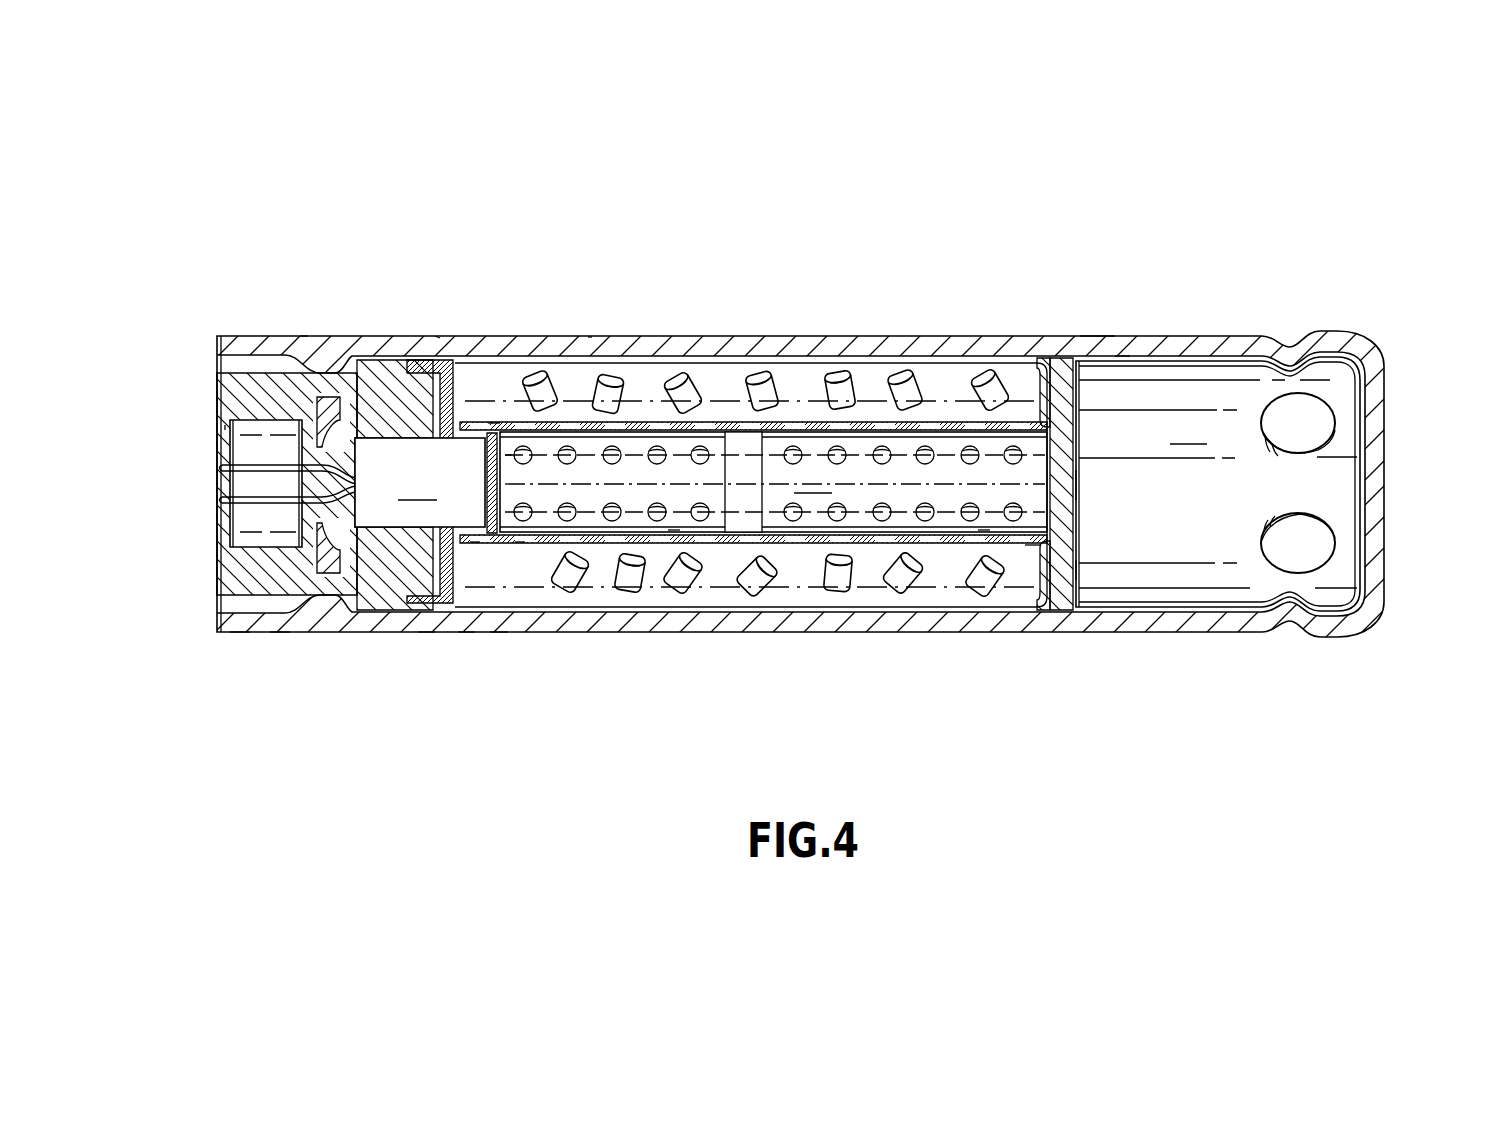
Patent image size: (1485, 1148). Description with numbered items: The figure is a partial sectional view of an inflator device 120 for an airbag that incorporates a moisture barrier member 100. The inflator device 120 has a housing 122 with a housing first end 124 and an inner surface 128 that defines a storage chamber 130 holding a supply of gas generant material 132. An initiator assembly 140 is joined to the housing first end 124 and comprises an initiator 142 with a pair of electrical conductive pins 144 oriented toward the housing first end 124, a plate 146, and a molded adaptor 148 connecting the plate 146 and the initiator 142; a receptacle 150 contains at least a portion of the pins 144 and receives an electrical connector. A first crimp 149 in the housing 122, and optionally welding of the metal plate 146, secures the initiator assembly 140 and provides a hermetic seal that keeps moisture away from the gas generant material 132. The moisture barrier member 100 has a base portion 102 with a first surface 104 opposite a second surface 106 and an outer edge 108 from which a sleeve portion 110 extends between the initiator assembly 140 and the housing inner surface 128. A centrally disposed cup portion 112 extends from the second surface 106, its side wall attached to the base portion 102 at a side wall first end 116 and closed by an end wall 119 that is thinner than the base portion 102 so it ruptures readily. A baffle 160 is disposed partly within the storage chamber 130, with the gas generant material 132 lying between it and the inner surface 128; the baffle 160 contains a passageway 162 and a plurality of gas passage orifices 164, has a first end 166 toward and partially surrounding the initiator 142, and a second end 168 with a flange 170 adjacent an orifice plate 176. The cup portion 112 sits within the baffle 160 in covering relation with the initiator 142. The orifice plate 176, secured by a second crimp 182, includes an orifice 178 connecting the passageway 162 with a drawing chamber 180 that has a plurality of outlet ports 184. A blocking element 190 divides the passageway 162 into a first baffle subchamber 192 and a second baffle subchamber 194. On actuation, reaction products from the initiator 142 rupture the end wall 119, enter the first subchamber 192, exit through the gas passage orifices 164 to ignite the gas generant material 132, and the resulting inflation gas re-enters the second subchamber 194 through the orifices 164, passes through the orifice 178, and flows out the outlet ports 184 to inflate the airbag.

The moisture barrier member 100 is at (437, 336).
The base portion 102 is at (499, 633).
The first surface 104 is at (398, 336).
The second surface 106 is at (460, 383).
The outer edge 108 is at (466, 633).
The sleeve portion 110 is at (427, 633).
The cup portion 112 is at (517, 526).
The side wall first end 116 is at (473, 548).
The end wall 119 is at (500, 478).
The inflator device 120 is at (255, 310).
The housing 122 is at (747, 336).
The housing first end 124 is at (238, 633).
The inner surface 128 is at (893, 363).
The storage chamber 130 is at (588, 382).
The gas generant material 132 is at (686, 382).
The initiator assembly 140 is at (277, 633).
The initiator 142 is at (426, 483).
The electrical conductive pins 144 is at (218, 500).
The plate 146 is at (333, 336).
The molded adaptor 148 is at (217, 586).
The first crimp 149 is at (304, 336).
The receptacle 150 is at (218, 448).
The baffle 160 is at (1004, 420).
The passageway 162 is at (773, 482).
The gas passage orifices 164 is at (700, 505).
The first end 166 is at (493, 425).
The second end 168 is at (1032, 547).
The flange 170 is at (1080, 570).
The orifice plate 176 is at (1117, 362).
The orifice 178 is at (1070, 485).
The drawing chamber 180 is at (1218, 484).
The second crimp 182 is at (1090, 368).
The outlet ports 184 is at (1349, 528).
The blocking element 190 is at (777, 422).
The first baffle subchamber 192 is at (672, 527).
The second baffle subchamber 194 is at (983, 525).